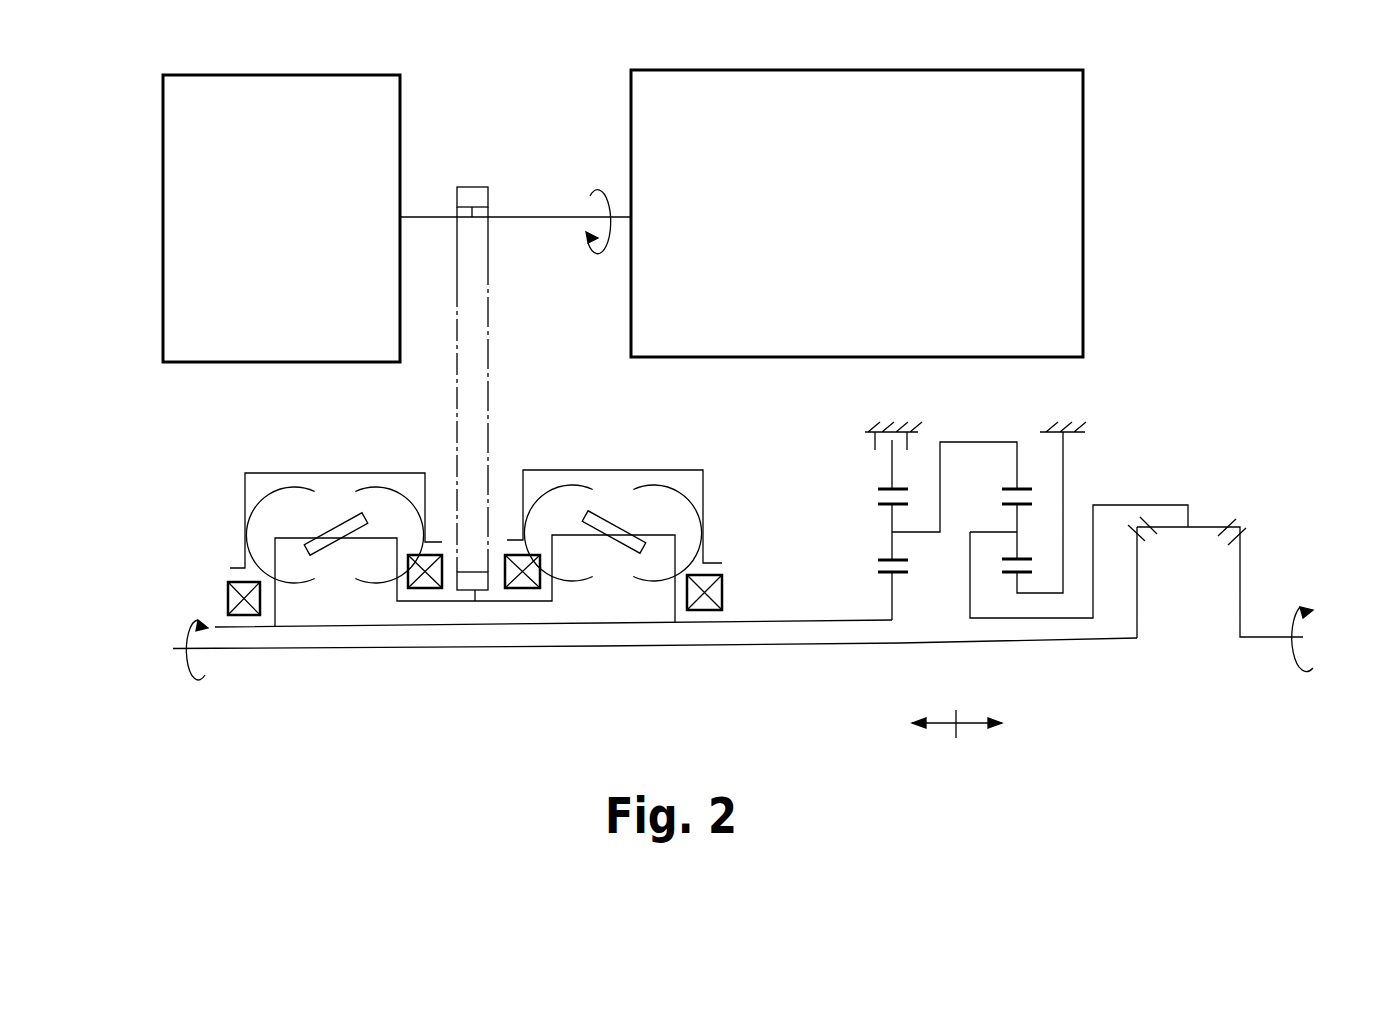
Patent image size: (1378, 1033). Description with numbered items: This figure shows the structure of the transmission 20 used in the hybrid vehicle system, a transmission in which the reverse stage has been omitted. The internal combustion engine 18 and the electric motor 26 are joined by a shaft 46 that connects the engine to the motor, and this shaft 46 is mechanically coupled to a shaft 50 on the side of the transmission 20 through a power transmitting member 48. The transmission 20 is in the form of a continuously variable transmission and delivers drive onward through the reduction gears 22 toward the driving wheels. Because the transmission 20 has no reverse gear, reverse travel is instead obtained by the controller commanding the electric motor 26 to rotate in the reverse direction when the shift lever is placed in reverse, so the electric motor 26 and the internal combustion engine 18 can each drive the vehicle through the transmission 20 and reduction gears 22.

The electric motor 26 is at (377, 75).
The internal combustion engine 18 is at (1015, 70).
The shaft 46 is at (531, 217).
The power transmitting member 48 is at (489, 260).
The shaft 50 is at (374, 648).
The transmission 20 is at (555, 712).
The reduction gears 22 is at (1180, 653).